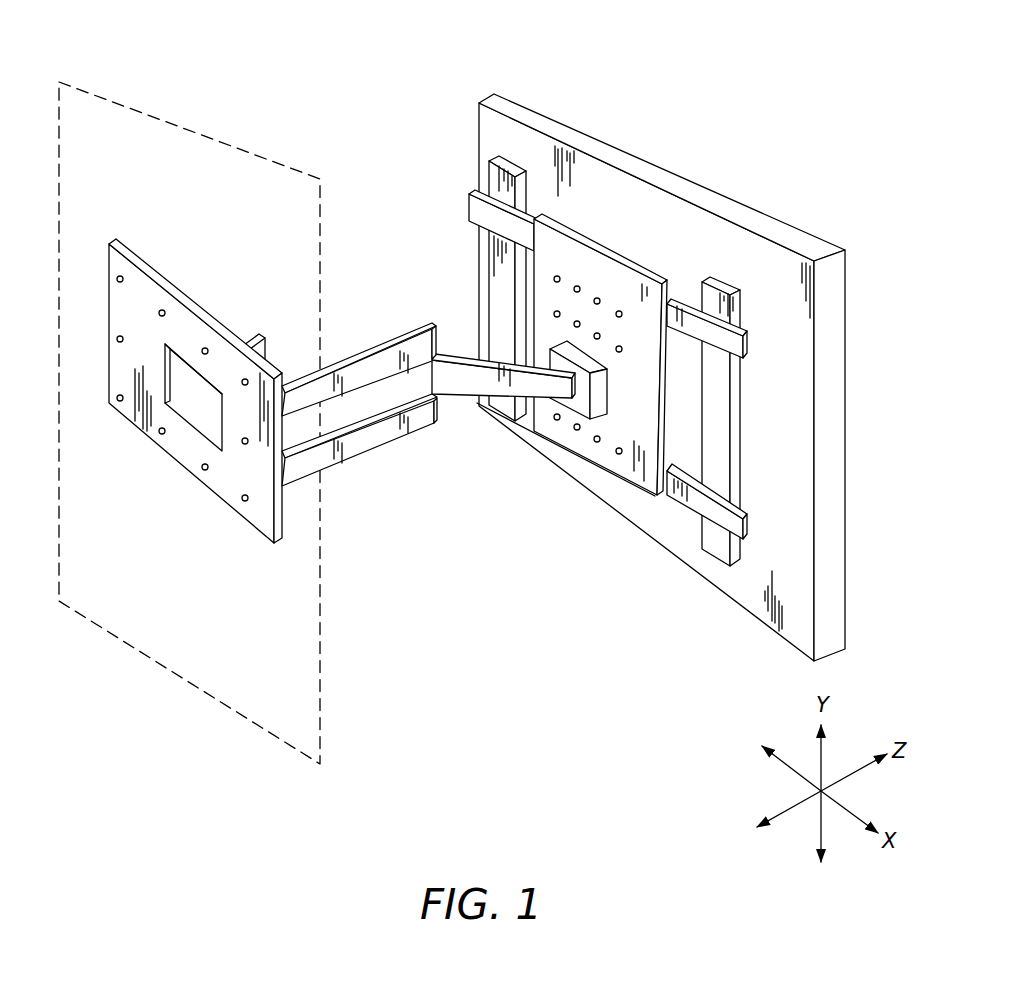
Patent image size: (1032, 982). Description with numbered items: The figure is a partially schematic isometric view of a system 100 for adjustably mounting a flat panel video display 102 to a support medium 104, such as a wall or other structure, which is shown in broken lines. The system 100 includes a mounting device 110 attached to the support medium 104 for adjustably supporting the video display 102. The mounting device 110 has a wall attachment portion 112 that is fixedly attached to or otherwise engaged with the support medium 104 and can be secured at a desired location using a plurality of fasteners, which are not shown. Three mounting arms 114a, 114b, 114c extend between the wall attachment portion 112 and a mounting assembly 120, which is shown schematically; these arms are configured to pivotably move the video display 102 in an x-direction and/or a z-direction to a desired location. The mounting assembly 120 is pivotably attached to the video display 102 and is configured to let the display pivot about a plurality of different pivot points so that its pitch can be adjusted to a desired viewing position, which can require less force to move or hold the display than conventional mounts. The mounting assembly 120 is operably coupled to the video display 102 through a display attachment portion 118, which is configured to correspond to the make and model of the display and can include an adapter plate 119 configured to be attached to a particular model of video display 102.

The system 100 is at (452, 422).
The flat panel video display 102 is at (747, 218).
The support medium 104 is at (247, 723).
The mounting device 110 is at (342, 354).
The wall attachment portion 112 is at (257, 517).
The mounting arm 114a is at (372, 340).
The mounting arm 114b is at (365, 440).
The mounting arm 114c is at (457, 383).
The display attachment portion 118 is at (619, 371).
The adapter plate 119 is at (585, 268).
The mounting assembly 120 is at (580, 403).